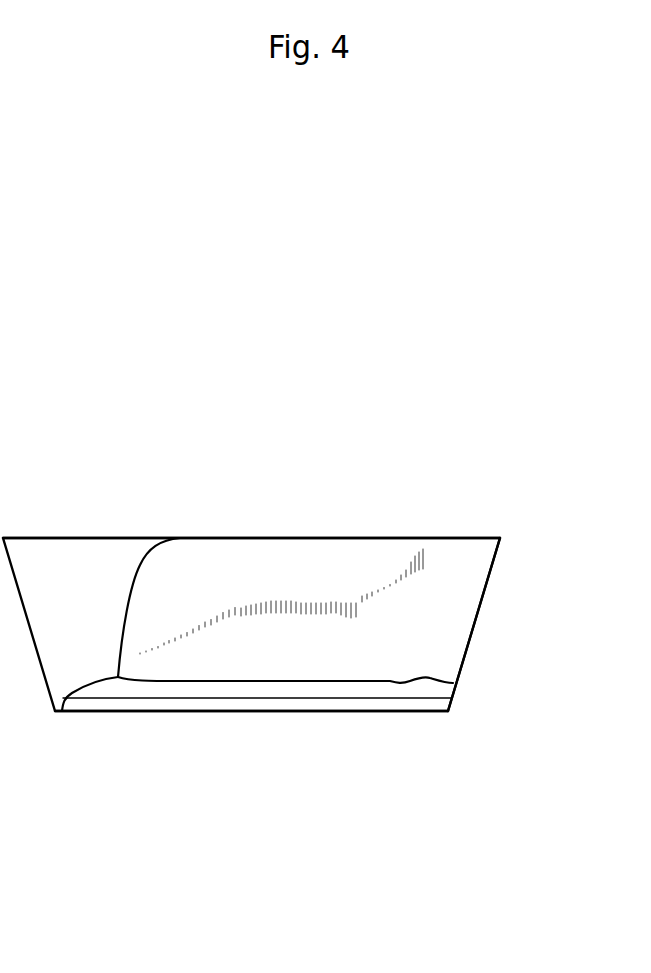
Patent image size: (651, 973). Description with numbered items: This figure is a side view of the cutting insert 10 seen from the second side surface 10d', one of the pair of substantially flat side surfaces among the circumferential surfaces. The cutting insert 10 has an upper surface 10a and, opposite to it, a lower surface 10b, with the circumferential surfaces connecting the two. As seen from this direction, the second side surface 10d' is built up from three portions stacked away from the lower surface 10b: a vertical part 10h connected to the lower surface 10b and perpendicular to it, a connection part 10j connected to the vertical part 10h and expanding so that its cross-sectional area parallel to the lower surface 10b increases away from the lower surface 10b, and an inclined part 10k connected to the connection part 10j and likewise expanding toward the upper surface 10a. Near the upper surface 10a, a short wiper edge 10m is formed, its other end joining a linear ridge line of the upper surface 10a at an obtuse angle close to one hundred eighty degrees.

The cutting insert 10 is at (478, 495).
The upper surface 10a is at (283, 538).
The lower surface 10b is at (187, 712).
The wiper edge 10m is at (153, 537).
The second side surface 10d' is at (294, 725).
The vertical part 10h is at (267, 700).
The connection part 10j is at (370, 688).
The inclined part 10k is at (453, 642).